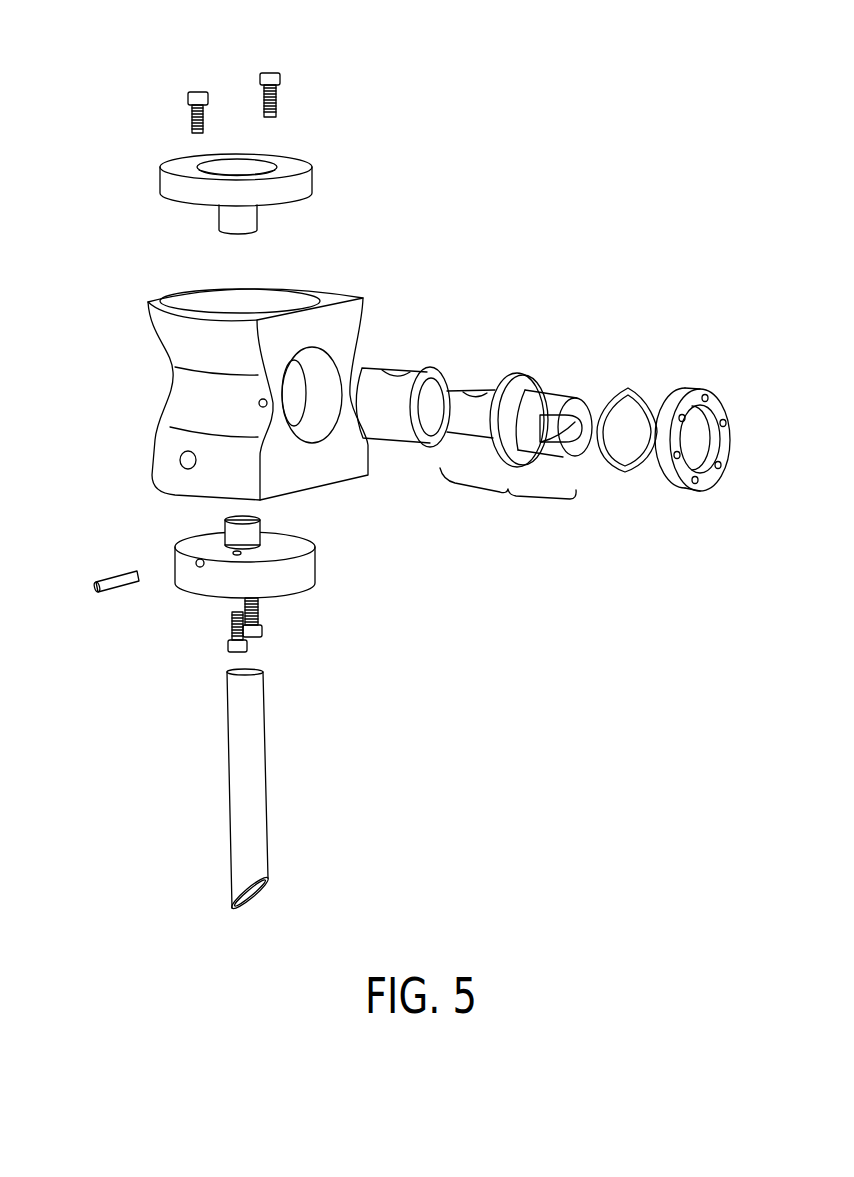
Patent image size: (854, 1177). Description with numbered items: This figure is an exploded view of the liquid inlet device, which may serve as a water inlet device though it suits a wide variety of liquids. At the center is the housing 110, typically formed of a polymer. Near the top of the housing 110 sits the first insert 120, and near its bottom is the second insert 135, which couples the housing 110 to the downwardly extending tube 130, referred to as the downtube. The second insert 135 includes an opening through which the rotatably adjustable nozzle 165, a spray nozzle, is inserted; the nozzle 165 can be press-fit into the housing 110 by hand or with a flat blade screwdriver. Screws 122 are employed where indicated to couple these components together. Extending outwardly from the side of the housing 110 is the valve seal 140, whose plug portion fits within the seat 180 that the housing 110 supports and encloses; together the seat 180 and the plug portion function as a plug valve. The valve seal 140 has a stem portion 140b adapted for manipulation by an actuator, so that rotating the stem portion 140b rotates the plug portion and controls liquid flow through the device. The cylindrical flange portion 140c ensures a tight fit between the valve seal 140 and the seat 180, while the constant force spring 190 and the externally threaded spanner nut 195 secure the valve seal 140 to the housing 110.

The housing 110 is at (355, 317).
The first insert 120 is at (302, 188).
The screws 122 is at (198, 91).
The tube 130 is at (252, 790).
The second insert 135 is at (300, 573).
The valve seal 140 is at (484, 424).
The stem portion 140b is at (575, 398).
The cylindrical flange portion 140c is at (530, 378).
The nozzle 165 is at (122, 583).
The seat 180 is at (428, 378).
The constant force spring 190 is at (628, 470).
The spanner nut 195 is at (710, 475).